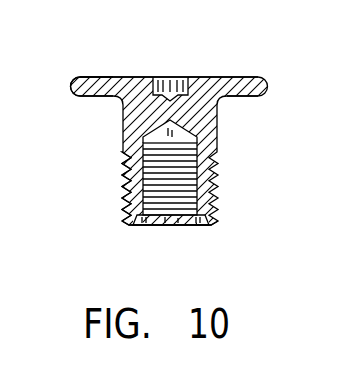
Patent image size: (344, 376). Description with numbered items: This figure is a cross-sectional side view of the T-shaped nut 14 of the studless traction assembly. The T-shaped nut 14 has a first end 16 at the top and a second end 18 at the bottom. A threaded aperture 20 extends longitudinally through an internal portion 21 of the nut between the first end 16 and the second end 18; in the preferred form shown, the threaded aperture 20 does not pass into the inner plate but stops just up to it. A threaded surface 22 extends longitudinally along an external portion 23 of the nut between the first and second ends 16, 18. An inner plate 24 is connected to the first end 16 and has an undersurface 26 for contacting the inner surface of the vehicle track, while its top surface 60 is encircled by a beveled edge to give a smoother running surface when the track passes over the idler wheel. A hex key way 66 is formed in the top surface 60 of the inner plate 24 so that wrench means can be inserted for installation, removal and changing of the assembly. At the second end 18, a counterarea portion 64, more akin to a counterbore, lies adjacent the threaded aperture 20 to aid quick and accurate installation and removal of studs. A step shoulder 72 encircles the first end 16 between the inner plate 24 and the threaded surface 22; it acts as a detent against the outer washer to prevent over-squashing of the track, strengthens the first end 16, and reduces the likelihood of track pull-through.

The T-shaped nut 14 is at (120, 124).
The first end 16 is at (208, 85).
The second end 18 is at (208, 228).
The threaded aperture 20 is at (157, 228).
The internal portion 21 is at (173, 192).
The threaded surface 22 is at (218, 192).
The external portion 23 is at (119, 200).
The inner plate 24 is at (252, 80).
The undersurface 26 is at (244, 96).
The top surface 60 is at (113, 77).
The counterarea portion 64 is at (185, 225).
The hex key way 66 is at (163, 77).
The step shoulder 72 is at (220, 142).